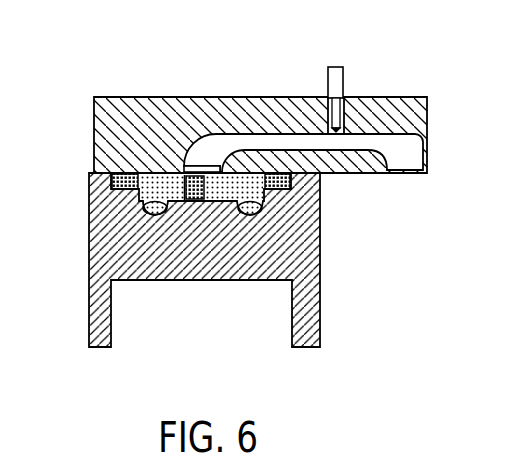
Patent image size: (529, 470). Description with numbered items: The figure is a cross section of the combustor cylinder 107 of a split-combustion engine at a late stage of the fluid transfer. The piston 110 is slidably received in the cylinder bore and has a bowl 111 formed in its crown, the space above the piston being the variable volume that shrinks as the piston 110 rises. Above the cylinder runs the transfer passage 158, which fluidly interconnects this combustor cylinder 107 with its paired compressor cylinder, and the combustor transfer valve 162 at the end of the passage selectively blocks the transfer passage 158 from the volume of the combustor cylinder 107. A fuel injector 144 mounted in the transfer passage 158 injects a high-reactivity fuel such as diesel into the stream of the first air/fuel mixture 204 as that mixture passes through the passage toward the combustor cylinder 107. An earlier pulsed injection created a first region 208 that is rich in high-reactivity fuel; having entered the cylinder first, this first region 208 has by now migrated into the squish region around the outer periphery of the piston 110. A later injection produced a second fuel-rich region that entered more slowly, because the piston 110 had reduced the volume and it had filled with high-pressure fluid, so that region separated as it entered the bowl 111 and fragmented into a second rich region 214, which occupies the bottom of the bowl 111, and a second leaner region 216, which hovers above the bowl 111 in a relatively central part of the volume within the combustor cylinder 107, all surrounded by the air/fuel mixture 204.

The combustor cylinder 107 is at (266, 350).
The piston 110 is at (213, 280).
The bowl 111 is at (183, 166).
The fuel injector 144 is at (341, 83).
The transfer passage 158 is at (272, 148).
The combustor transfer valve 162 is at (215, 151).
The air/fuel mixture 204 is at (221, 190).
The first region 208 is at (111, 177).
The second rich region 214 is at (130, 207).
The second leaner region 216 is at (178, 200).